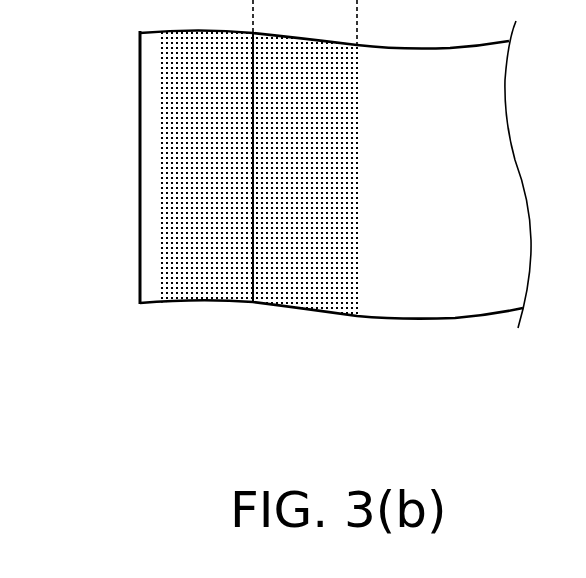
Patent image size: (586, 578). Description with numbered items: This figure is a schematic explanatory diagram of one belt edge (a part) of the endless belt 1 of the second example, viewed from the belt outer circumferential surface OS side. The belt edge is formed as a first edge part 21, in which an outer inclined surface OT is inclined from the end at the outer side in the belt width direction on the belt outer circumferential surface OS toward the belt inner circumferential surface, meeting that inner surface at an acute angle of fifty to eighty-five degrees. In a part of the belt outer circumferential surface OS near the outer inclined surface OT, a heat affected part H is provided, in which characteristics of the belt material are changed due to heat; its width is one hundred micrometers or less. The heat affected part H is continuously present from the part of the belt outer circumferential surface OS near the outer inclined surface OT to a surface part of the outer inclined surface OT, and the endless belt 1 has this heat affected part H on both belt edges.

The endless belt 1 is at (218, 311).
The first edge part 21 is at (203, 118).
The outer inclined surface OT is at (155, 217).
The belt outer circumferential surface OS is at (455, 283).
The heat affected part H is at (302, 284).